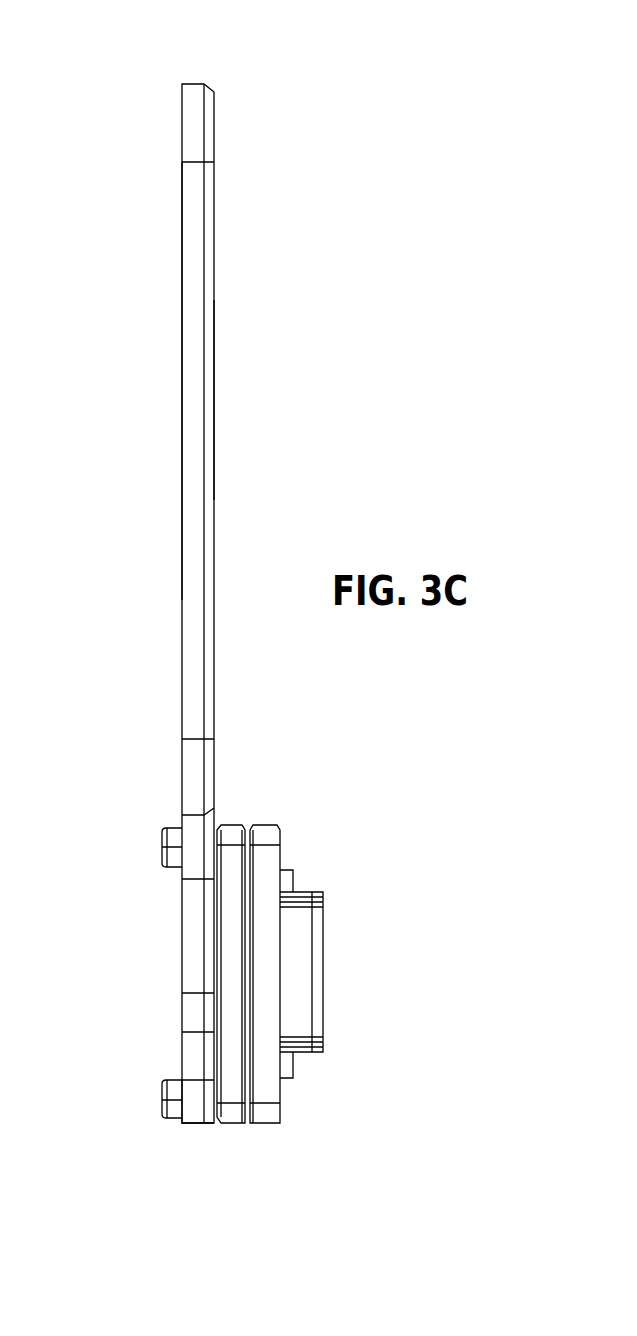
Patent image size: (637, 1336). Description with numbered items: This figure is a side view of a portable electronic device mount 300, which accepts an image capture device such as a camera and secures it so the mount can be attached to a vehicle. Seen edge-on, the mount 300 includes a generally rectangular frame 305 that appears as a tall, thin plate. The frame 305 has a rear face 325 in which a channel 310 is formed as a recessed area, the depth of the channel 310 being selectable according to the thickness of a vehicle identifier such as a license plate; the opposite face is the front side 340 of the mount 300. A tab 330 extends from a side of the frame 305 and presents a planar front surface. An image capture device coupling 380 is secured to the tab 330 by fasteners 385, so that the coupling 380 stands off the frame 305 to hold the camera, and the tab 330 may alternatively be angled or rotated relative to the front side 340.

The portable electronic device mount 300 is at (430, 152).
The frame 305 is at (224, 90).
The channel 310 is at (182, 253).
The front side 340 is at (219, 393).
The rear face 325 is at (180, 483).
The tab 330 is at (182, 1124).
The fasteners 385 is at (160, 844).
The image capture device coupling 380 is at (249, 1129).